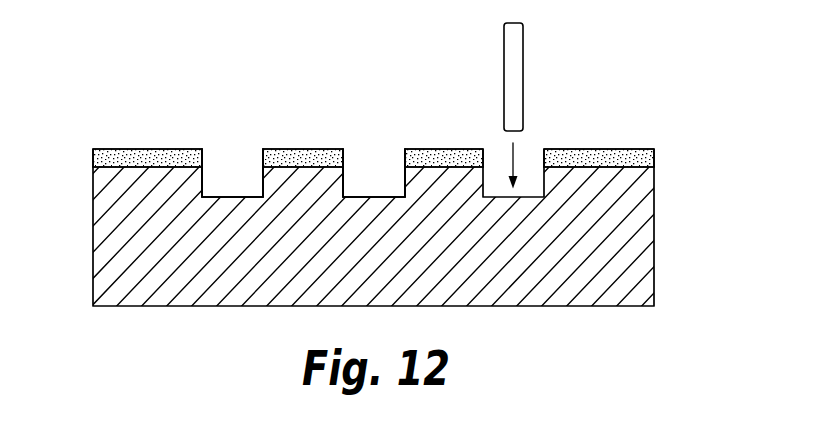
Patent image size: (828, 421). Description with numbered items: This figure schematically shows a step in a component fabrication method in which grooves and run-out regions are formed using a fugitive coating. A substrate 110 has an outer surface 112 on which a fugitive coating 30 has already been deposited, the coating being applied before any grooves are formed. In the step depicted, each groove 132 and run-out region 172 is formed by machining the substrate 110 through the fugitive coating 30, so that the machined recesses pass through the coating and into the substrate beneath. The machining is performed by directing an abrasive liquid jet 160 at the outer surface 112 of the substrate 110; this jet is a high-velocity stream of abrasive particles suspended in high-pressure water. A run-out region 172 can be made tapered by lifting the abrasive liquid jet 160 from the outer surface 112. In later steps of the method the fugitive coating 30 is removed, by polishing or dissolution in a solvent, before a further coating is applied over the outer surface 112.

The substrate 110 is at (635, 255).
The outer surface 112 is at (109, 170).
The fugitive coating 30 is at (120, 153).
The groove 132 is at (235, 178).
The run-out region 172 is at (279, 148).
The abrasive liquid jet 160 is at (513, 43).